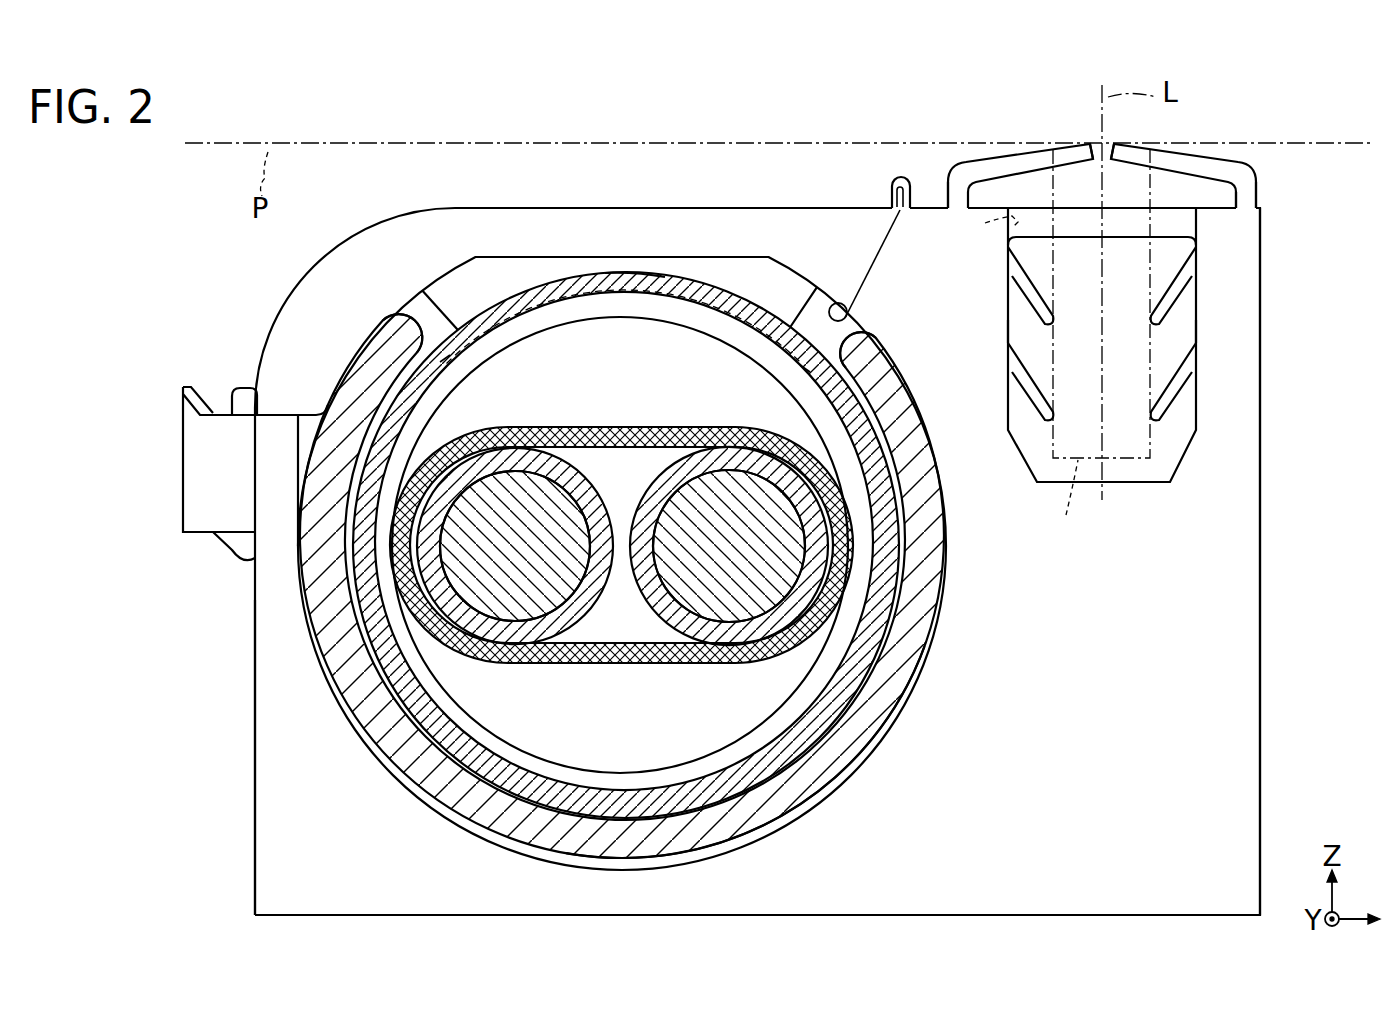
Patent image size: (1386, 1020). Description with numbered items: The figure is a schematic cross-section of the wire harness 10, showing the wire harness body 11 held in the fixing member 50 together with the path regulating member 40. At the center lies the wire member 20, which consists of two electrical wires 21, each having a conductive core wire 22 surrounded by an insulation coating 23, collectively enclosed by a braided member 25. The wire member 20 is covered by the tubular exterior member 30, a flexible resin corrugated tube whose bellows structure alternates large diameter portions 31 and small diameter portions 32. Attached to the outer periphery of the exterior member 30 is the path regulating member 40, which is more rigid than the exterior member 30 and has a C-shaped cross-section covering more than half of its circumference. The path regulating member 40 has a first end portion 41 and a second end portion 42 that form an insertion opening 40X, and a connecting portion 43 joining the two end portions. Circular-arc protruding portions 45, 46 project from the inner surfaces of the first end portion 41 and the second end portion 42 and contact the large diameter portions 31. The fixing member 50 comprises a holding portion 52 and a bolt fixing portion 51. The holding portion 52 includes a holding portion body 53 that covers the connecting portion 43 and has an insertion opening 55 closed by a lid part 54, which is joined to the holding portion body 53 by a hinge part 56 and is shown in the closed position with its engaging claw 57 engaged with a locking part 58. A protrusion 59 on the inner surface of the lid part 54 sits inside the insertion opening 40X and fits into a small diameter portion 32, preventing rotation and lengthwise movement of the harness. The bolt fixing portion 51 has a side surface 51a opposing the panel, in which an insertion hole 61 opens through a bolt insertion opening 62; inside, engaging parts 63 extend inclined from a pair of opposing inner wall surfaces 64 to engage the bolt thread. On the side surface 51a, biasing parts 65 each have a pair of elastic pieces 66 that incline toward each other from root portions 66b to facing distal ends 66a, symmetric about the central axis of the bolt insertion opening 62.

The wire harness 10 is at (258, 314).
The wire harness body 11 is at (365, 716).
The wire member 20 is at (621, 593).
The electrical wire 21 is at (622, 597).
The core wire 22 is at (562, 705).
The insulation coating 23 is at (543, 655).
The braided member 25 is at (652, 662).
The exterior member 30 is at (626, 515).
The large diameter portion 31 is at (660, 282).
The small diameter portion 32 is at (620, 320).
The path regulating member 40 is at (622, 583).
The insertion opening 40X is at (410, 333).
The first end portion 41 is at (384, 350).
The second end portion 42 is at (856, 350).
The connecting portion 43 is at (745, 816).
The protruding portion 45 is at (418, 368).
The protruding portion 46 is at (823, 371).
The fixing member 50 is at (1000, 916).
The bolt fixing portion 51 is at (1258, 238).
The side surface 51a is at (1220, 195).
The holding portion 52 is at (545, 917).
The holding portion body 53 is at (455, 878).
The lid part 54 is at (568, 206).
The insertion opening 55 is at (841, 300).
The hinge part 56 is at (893, 180).
The engaging claw 57 is at (237, 563).
The locking part 58 is at (215, 512).
The protrusion 59 is at (500, 262).
The insertion hole 61 is at (1103, 347).
The bolt insertion opening 62 is at (983, 222).
The engaging part 63 is at (1020, 297).
The inner wall surface 64 is at (1010, 324).
The biasing part 65 is at (1111, 145).
The elastic piece 66 is at (1014, 155).
The distal end 66a is at (1092, 148).
The root portion 66b is at (950, 200).